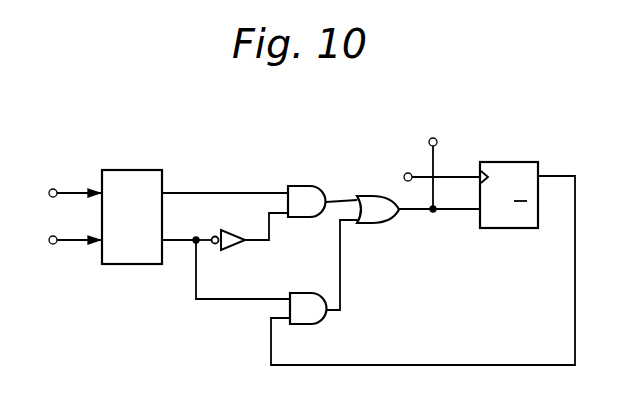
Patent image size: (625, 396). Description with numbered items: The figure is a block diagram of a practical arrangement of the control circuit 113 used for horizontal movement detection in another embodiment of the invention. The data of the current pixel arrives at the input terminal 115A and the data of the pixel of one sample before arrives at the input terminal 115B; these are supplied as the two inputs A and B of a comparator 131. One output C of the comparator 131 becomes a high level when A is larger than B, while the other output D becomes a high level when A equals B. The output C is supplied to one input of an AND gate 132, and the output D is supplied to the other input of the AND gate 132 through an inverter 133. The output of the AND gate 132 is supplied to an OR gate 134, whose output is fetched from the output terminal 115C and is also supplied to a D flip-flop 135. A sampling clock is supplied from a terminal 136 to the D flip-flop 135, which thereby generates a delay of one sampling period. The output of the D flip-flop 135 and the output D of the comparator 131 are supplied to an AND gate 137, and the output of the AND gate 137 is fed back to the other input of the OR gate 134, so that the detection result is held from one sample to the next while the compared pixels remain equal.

The control circuit 113 is at (254, 160).
The input terminal 115A is at (54, 189).
The input terminal 115B is at (53, 244).
The output terminal 115C is at (437, 138).
The comparator 131 is at (118, 265).
The AND gate 132 is at (304, 218).
The inverter 133 is at (232, 249).
The OR gate 134 is at (376, 224).
The D flip-flop 135 is at (497, 229).
The terminal 136 is at (403, 172).
The AND gate 137 is at (314, 325).